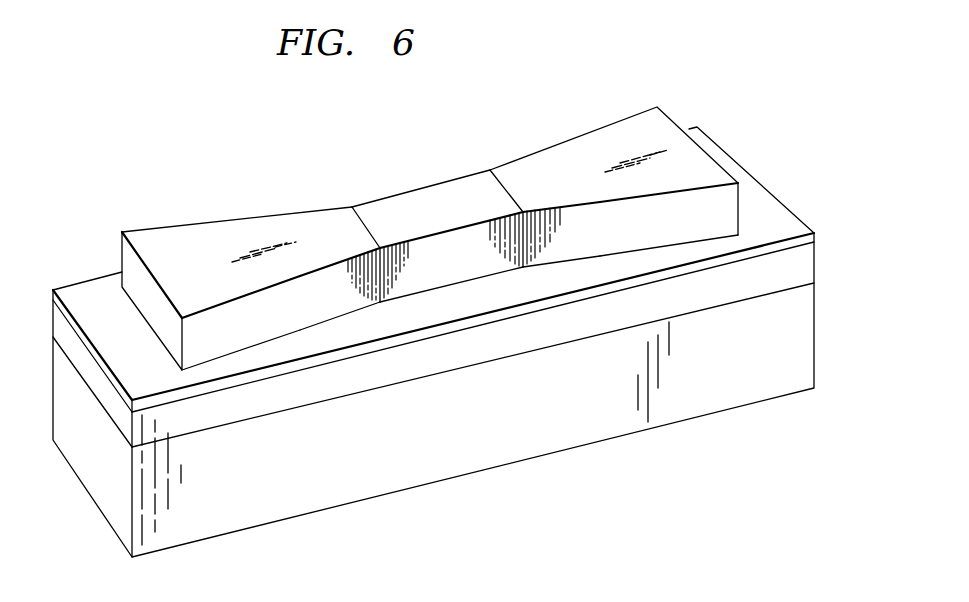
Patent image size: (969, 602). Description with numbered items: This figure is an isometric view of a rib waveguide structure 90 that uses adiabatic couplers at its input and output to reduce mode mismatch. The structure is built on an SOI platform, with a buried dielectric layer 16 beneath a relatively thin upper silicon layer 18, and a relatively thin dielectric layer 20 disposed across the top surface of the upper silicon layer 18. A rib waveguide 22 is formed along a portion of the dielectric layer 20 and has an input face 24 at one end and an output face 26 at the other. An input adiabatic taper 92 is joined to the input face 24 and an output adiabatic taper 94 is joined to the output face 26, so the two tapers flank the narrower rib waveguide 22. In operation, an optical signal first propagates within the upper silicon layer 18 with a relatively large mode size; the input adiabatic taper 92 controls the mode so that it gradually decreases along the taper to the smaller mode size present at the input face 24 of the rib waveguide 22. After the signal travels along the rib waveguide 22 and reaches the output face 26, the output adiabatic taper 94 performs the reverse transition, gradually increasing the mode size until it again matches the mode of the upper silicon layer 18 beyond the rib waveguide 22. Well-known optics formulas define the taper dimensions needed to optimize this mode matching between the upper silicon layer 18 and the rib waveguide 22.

The buried dielectric layer 16 is at (808, 340).
The upper silicon layer 18 is at (808, 268).
The dielectric layer 20 is at (813, 242).
The rib waveguide 22 is at (428, 203).
The input face 24 is at (358, 228).
The output face 26 is at (505, 190).
The rib waveguide structure 90 is at (560, 478).
The input adiabatic taper 92 is at (223, 242).
The output adiabatic taper 94 is at (623, 152).